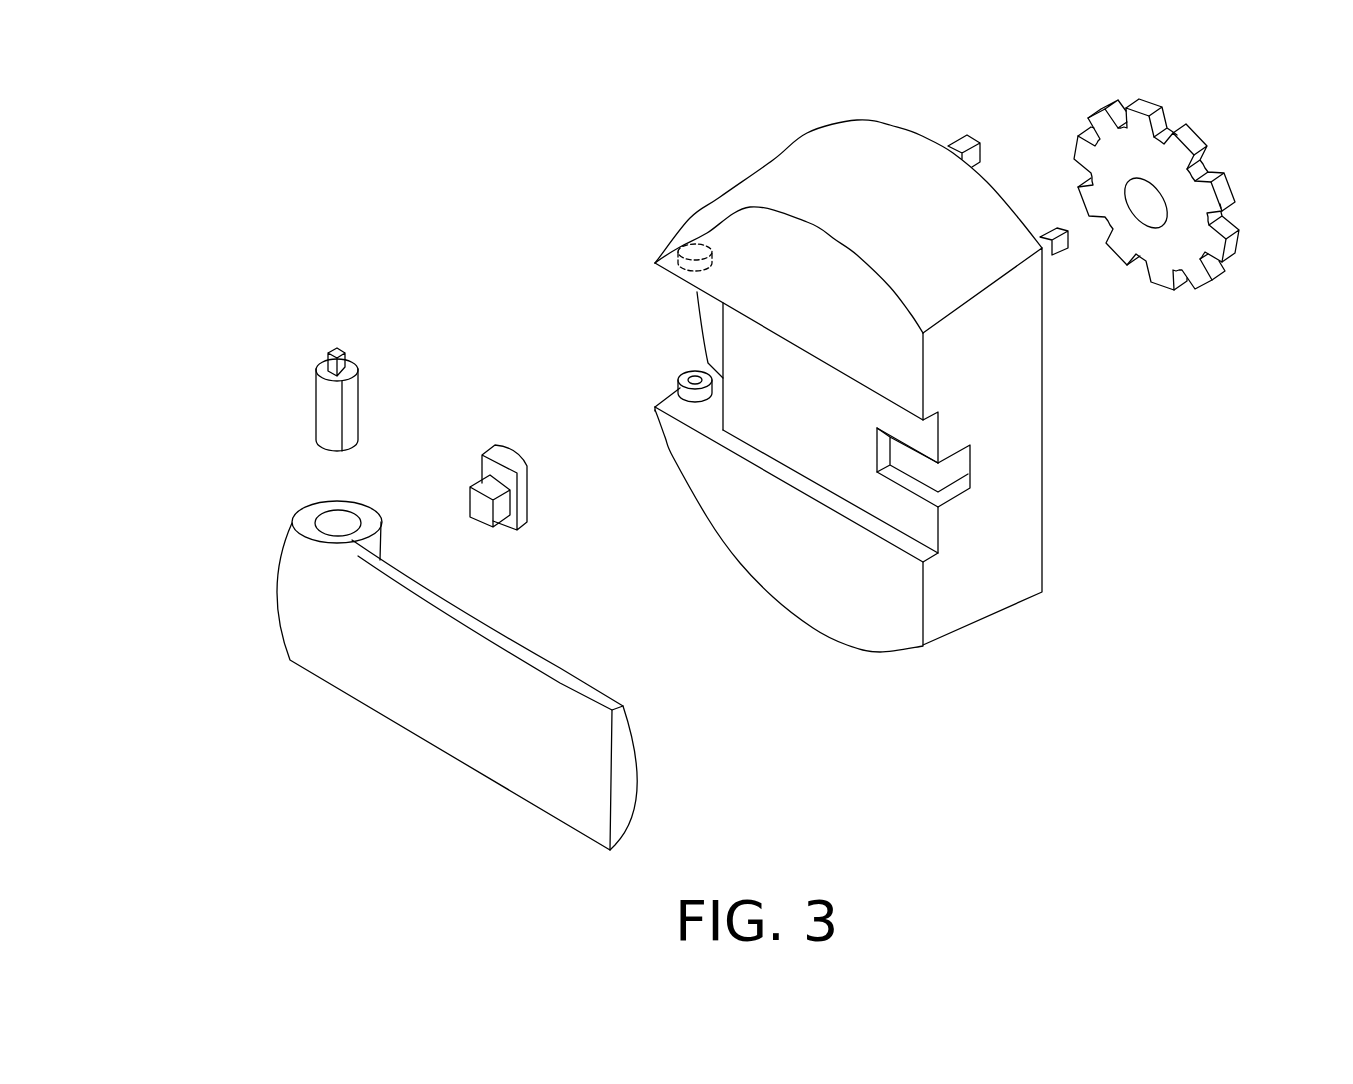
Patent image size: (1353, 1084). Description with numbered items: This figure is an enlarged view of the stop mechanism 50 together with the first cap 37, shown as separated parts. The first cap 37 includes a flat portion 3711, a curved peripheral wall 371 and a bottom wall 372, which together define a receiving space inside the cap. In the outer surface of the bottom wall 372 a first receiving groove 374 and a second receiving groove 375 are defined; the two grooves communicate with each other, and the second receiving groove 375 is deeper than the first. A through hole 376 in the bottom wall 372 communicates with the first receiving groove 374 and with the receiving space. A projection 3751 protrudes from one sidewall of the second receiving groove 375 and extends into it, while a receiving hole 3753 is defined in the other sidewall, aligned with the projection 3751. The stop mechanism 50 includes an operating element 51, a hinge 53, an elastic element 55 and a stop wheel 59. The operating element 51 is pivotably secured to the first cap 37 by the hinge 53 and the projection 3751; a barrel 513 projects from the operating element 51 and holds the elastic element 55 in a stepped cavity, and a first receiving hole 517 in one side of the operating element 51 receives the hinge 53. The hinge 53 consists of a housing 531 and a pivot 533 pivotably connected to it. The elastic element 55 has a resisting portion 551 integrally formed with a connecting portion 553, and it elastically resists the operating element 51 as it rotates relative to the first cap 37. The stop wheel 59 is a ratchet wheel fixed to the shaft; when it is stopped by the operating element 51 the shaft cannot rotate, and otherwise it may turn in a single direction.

The first cap 37 is at (632, 115).
The curved peripheral wall 371 is at (803, 175).
The bottom wall 372 is at (707, 237).
The flat portion 3711 is at (990, 577).
The first receiving groove 374 is at (815, 457).
The second receiving groove 375 is at (717, 331).
The projection 3751 is at (655, 412).
The receiving hole 3753 is at (680, 260).
The through hole 376 is at (927, 472).
The stop wheel 59 is at (1118, 158).
The stop mechanism 50 is at (380, 352).
The hinge 53 is at (212, 330).
The housing 531 is at (330, 415).
The pivot 533 is at (332, 352).
The elastic element 55 is at (532, 393).
The resisting portion 551 is at (510, 458).
The connecting portion 553 is at (477, 503).
The operating element 51 is at (425, 708).
The barrel 513 is at (352, 541).
The first receiving hole 517 is at (335, 525).